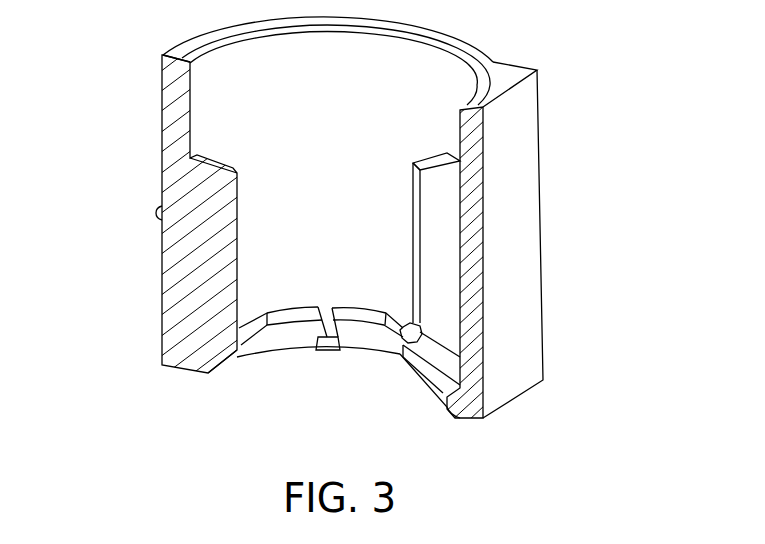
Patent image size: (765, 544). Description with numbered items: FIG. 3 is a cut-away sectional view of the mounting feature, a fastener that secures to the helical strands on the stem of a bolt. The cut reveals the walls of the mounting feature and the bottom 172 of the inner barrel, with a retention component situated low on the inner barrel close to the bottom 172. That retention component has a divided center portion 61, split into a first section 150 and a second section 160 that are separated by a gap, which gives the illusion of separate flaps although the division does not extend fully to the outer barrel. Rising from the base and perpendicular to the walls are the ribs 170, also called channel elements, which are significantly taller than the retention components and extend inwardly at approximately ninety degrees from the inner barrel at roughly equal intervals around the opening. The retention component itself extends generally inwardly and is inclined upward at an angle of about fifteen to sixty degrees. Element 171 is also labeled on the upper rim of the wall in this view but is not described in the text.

The upper rim of cup-shaped housing 171 is at (161, 68).
The ribs 170 is at (162, 322).
The bottom of the inner barrel 172 is at (231, 361).
The first section 150 is at (272, 358).
The second section 160 is at (372, 358).
The divided center portion 61 is at (324, 362).